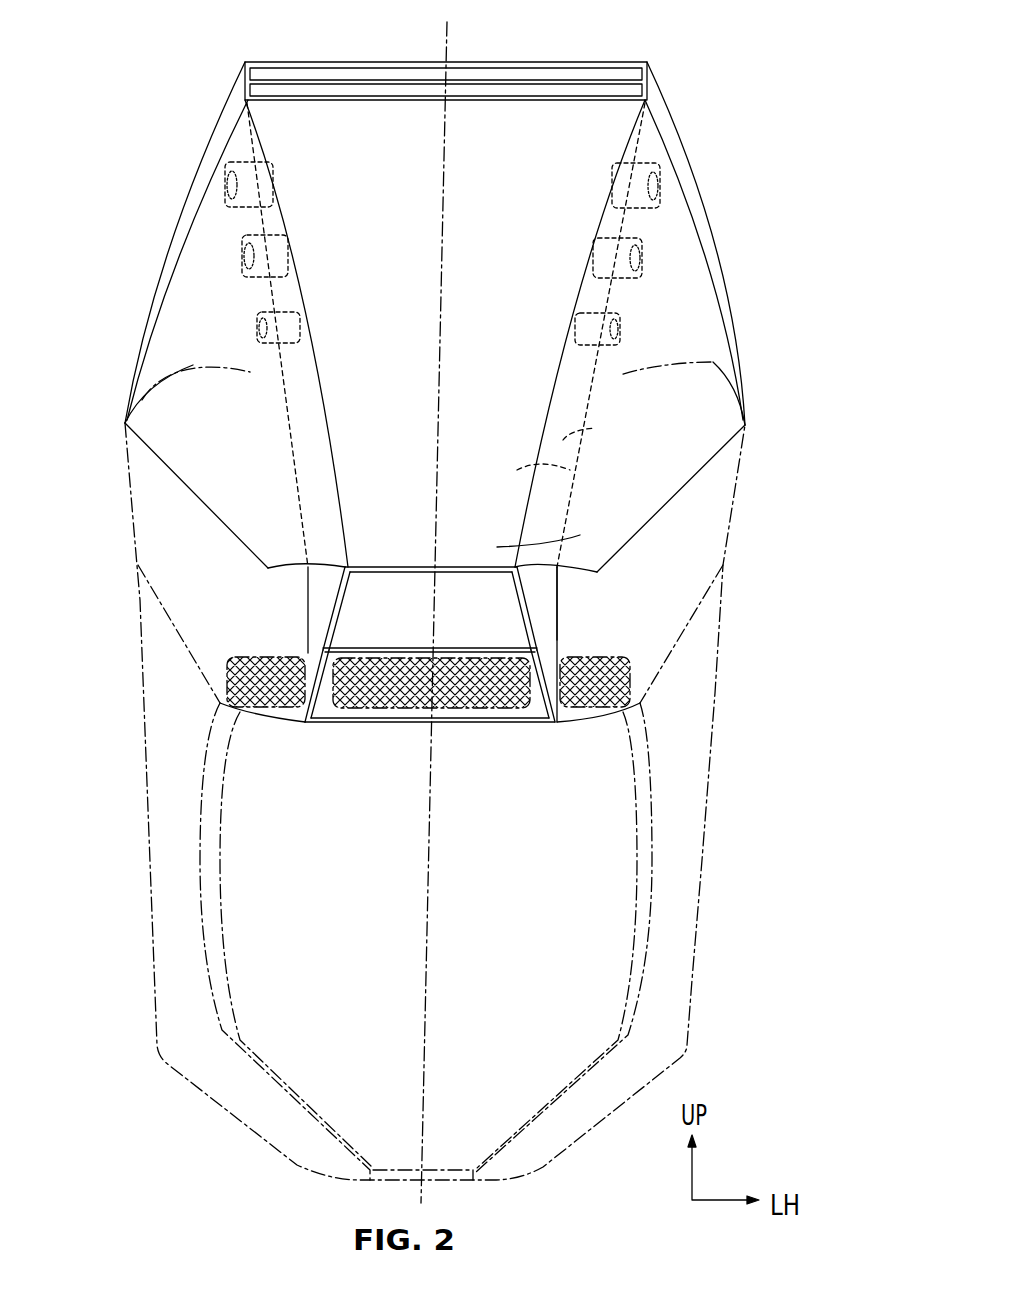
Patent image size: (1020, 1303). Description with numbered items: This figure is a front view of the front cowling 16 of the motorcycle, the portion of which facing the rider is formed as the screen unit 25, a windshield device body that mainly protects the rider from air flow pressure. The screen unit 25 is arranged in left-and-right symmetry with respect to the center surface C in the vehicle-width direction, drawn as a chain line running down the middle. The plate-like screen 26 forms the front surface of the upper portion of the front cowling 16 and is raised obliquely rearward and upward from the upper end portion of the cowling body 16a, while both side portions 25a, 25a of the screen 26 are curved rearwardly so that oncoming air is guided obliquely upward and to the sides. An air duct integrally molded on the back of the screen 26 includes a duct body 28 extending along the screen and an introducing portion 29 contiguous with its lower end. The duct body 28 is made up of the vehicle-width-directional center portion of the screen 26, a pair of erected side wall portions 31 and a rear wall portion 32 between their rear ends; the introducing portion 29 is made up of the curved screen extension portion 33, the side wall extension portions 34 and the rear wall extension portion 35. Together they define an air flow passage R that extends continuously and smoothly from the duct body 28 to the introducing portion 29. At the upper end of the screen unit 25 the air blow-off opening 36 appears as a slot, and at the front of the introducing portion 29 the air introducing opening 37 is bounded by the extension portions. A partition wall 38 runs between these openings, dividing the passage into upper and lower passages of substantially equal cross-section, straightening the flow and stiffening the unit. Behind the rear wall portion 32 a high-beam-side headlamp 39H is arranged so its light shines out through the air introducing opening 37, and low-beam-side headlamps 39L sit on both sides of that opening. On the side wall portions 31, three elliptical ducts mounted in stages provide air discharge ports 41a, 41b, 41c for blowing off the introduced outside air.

The front cowling 16 is at (752, 315).
The cowling body 16a is at (745, 497).
The screen unit 25 is at (703, 130).
The side portion of the screen 25a is at (177, 345).
The screen 26 is at (325, 228).
The duct body 28 is at (287, 285).
The introducing portion 29 is at (548, 620).
The side wall portion 31 is at (318, 448).
The rear wall portion 32 is at (570, 470).
The screen extension portion 33 is at (580, 535).
The side wall extension portion 34 is at (308, 603).
The rear wall extension portion 35 is at (527, 733).
The air blow-off opening 36 is at (592, 90).
The air introducing opening 37 is at (483, 725).
The partition wall 38 is at (493, 650).
The high-beam-side headlamp 39H is at (375, 710).
The low-beam-side headlamp 39L is at (233, 680).
The air discharge port 41a is at (662, 189).
The air discharge port 41b is at (640, 253).
The air discharge port 41c is at (617, 330).
The air flow passage R is at (528, 315).
The center surface C is at (458, 52).